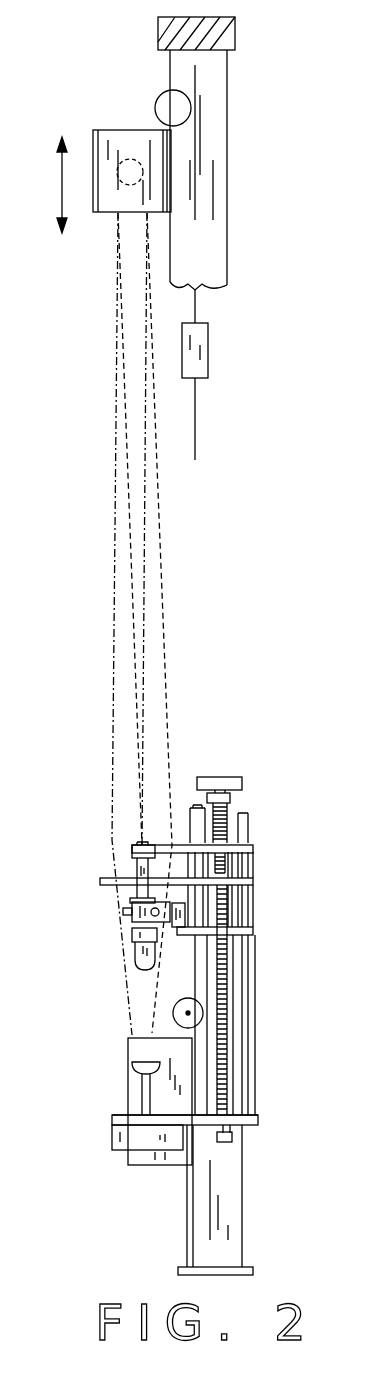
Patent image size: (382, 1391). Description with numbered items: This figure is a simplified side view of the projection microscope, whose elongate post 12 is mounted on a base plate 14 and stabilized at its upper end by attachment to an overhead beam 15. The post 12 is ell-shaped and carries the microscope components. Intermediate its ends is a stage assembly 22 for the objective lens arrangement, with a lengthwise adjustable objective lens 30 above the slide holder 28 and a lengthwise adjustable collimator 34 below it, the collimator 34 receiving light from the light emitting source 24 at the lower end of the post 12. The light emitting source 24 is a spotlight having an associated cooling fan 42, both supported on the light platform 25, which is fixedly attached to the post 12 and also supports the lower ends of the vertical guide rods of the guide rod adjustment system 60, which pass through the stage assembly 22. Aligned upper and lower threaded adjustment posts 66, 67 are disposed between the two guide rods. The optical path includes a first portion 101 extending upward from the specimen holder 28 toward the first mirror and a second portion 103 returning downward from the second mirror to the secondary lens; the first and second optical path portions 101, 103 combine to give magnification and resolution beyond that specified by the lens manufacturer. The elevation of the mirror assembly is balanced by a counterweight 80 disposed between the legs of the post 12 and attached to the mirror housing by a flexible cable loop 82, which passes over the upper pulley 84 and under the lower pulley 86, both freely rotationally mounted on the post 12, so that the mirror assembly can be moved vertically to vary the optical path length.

The elongate post 12 is at (225, 98).
The base plate 14 is at (244, 1267).
The overhead beam 15 is at (235, 24).
The stage assembly 22 is at (98, 881).
The light emitting source 24 is at (140, 1062).
The light platform 25 is at (113, 1120).
The slide holder 28 is at (130, 878).
The objective lens 30 is at (173, 843).
The collimator 34 is at (133, 960).
The cooling fan 42 is at (113, 1128).
The guide rod adjustment system 60 is at (257, 903).
The upper threaded adjustment post 66 is at (223, 822).
The lower threaded adjustment post 67 is at (228, 952).
The counterweight 80 is at (201, 325).
The flexible cable loop 82 is at (195, 413).
The upper pulley 84 is at (170, 91).
The lower pulley 86 is at (203, 1020).
The first optical path portion 101 is at (145, 517).
The second optical path portion 103 is at (113, 470).